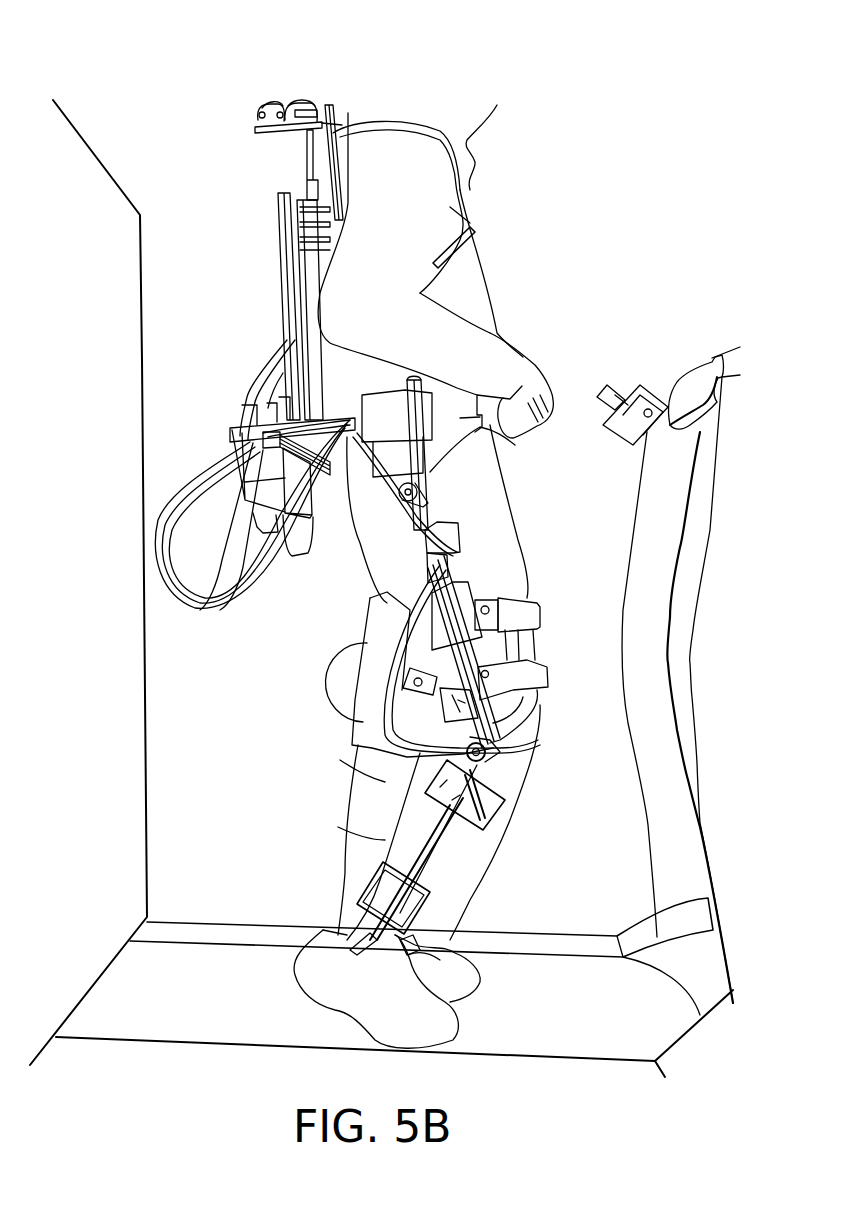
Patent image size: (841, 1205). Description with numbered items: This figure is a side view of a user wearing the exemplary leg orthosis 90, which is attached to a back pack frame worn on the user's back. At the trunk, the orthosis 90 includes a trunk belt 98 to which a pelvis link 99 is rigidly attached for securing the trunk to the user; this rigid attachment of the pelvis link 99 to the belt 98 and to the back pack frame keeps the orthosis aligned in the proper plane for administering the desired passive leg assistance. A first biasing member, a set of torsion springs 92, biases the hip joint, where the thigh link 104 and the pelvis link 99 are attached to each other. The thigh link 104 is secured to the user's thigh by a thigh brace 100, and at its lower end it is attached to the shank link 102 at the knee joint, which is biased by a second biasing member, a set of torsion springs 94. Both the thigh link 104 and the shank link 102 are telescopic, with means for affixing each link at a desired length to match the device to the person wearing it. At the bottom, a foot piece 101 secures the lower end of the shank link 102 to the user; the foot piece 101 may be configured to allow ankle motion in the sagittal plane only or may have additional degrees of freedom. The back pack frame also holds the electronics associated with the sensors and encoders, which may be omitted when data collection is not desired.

The orthosis 90 is at (281, 206).
The pelvis link 99 is at (300, 236).
The trunk belt 98 is at (490, 434).
The set of torsion springs 92 is at (430, 481).
The thigh link 104 is at (455, 522).
The thigh brace 100 is at (410, 706).
The set of torsion springs 94 is at (470, 765).
The shank link 102 is at (445, 812).
The foot piece 101 is at (365, 925).